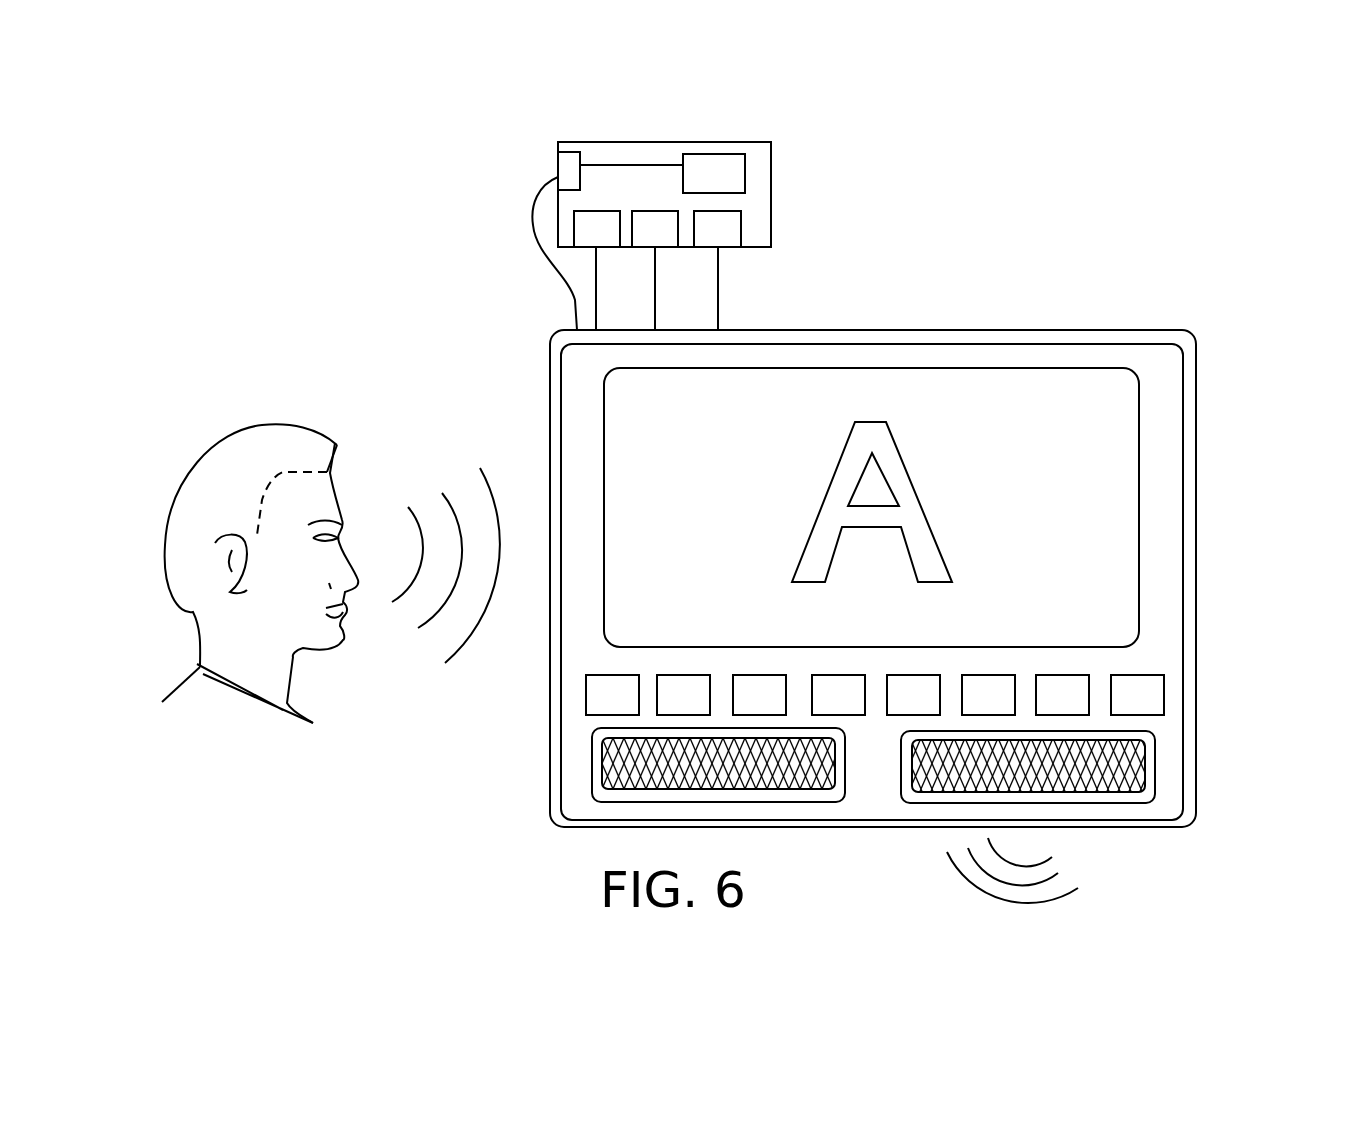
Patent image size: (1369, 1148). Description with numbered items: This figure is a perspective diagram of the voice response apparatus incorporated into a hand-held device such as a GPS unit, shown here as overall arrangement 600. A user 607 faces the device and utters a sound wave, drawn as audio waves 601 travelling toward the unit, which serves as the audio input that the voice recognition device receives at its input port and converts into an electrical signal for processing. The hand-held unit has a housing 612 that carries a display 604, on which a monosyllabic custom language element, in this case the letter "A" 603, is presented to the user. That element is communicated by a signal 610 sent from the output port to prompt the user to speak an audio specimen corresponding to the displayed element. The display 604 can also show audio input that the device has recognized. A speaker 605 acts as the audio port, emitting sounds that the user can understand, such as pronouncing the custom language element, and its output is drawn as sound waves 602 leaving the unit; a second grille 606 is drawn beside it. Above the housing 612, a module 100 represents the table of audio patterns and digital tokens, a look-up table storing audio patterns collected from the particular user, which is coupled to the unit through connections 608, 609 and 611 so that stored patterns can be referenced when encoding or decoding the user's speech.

The speech therapy system 600 is at (342, 188).
The table of audio patterns and digital tokens 100 is at (774, 128).
The user speech sound waves 601 is at (446, 584).
The output sound waves 602 is at (1040, 870).
The letter "A" 603 is at (887, 410).
The display 604 is at (1120, 447).
The speaker 605 is at (1170, 772).
The left speaker 606 is at (580, 768).
The user 607 is at (190, 427).
The connector 608 is at (717, 279).
The connector 609 is at (655, 320).
The signal 610 is at (593, 320).
The cable 611 is at (548, 262).
The device housing 612 is at (1189, 321).